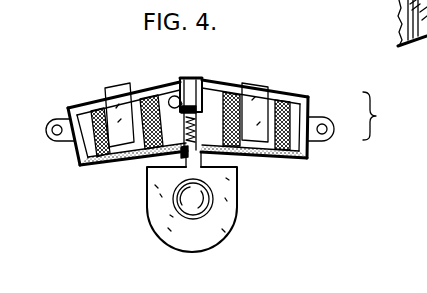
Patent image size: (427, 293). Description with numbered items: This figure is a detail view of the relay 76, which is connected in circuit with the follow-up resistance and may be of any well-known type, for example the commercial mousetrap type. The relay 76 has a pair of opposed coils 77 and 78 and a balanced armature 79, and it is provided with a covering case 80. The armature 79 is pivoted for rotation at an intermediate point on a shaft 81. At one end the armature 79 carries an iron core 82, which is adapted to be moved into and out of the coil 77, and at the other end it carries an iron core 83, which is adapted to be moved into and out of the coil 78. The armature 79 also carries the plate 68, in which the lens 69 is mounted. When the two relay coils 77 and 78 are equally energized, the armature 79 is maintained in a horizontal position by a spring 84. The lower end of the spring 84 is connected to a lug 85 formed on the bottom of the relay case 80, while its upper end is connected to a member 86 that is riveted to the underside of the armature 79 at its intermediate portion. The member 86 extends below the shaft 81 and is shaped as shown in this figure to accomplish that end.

The plate 68 is at (236, 216).
The lens 69 is at (210, 187).
The relay 76 is at (300, 125).
The coil 77 is at (70, 120).
The coil 78 is at (309, 110).
The balanced armature 79 is at (236, 80).
The covering case 80 is at (113, 166).
The shaft 81 is at (193, 78).
The iron core 82 is at (118, 88).
The iron core 83 is at (258, 107).
The spring 84 is at (187, 134).
The lug 85 is at (186, 149).
The member 86 is at (175, 92).